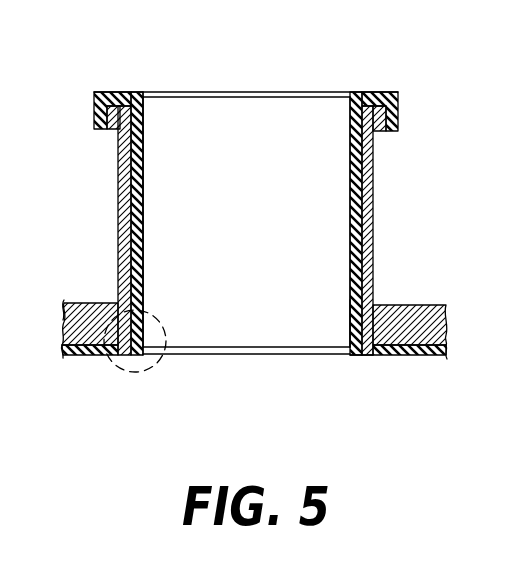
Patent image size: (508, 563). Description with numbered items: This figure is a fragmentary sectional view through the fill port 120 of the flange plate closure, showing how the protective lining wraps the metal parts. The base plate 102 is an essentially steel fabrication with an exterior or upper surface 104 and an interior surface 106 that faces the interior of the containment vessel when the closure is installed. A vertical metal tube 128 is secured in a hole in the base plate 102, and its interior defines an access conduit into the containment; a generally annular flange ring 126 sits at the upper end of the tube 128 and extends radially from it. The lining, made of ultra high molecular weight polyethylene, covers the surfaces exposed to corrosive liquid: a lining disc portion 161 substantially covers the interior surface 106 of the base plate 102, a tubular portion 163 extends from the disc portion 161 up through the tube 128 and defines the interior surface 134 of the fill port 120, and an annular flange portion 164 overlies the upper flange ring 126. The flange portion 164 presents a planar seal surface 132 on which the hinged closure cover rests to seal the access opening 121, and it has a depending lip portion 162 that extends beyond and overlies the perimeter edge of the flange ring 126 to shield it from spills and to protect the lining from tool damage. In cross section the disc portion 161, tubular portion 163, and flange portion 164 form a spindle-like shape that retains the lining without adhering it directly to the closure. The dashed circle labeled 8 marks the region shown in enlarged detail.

The fill port 120 is at (441, 84).
The access opening 121 is at (226, 146).
The vertical metal tube 128 is at (373, 178).
The interior surface 134 is at (143, 267).
The planar seal surface 132 is at (122, 92).
The flange ring 126 is at (107, 116).
The annular flange portion 164 is at (373, 92).
The depending lip portion 162 is at (398, 117).
The exterior or upper surface 104 is at (400, 304).
The interior surface 106 is at (413, 357).
The base plate 102 is at (418, 313).
The tubular portion 163 is at (349, 308).
The lining disc portion 161 is at (379, 357).
The detail region of FIG. 8 is at (165, 366).